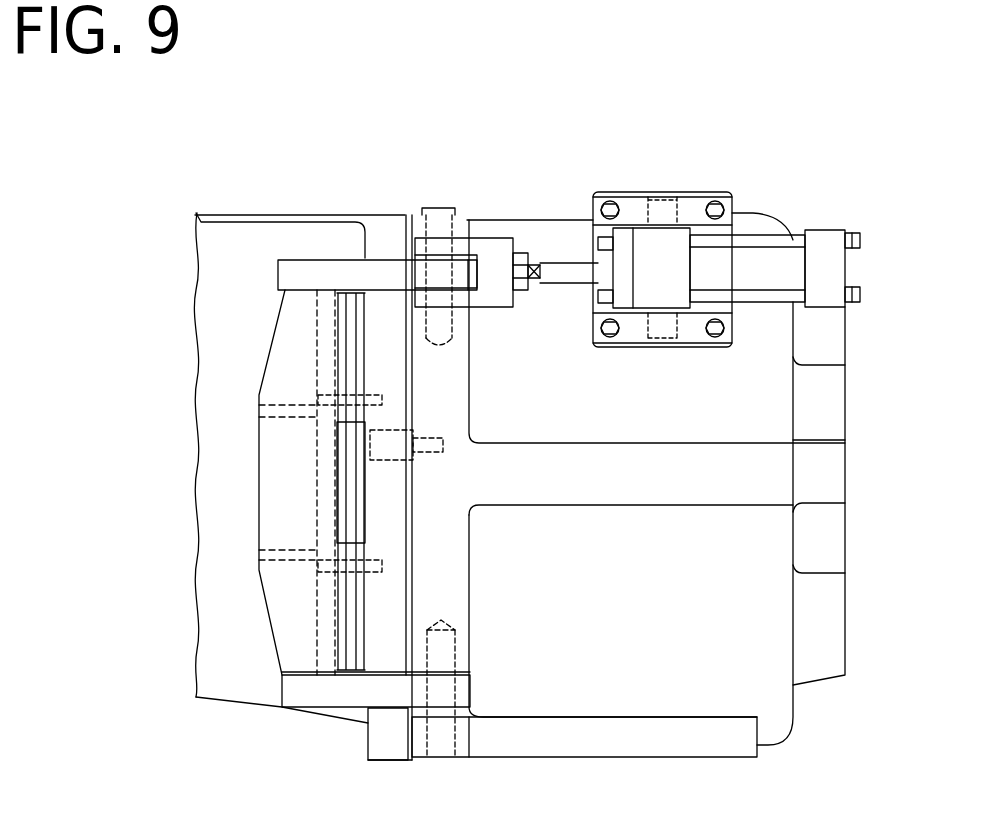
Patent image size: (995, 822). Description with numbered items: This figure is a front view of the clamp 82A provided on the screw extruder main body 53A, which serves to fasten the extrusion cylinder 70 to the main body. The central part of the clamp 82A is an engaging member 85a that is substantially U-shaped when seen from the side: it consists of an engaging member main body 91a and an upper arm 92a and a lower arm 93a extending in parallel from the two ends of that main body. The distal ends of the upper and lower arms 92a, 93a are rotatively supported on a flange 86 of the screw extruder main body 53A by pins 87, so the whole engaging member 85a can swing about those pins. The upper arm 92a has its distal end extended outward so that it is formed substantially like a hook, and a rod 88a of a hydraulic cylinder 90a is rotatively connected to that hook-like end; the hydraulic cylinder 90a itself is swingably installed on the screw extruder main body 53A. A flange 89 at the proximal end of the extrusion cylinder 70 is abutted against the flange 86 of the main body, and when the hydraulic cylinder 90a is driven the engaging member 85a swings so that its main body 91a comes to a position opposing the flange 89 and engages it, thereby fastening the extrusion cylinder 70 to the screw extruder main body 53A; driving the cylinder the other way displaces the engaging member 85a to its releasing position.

The extrusion cylinder 70 is at (197, 369).
The engaging member 85a is at (294, 255).
The engaging member main body 91a is at (283, 345).
The upper arm 92a is at (380, 270).
The flange 89 is at (377, 493).
The flange 86 is at (465, 236).
The pins 87 is at (436, 207).
The rod 88a is at (563, 265).
The clamp 82A is at (673, 173).
The hydraulic cylinder 90a is at (822, 240).
The screw extruder main body 53A is at (595, 460).
The lower arm 93a is at (343, 690).